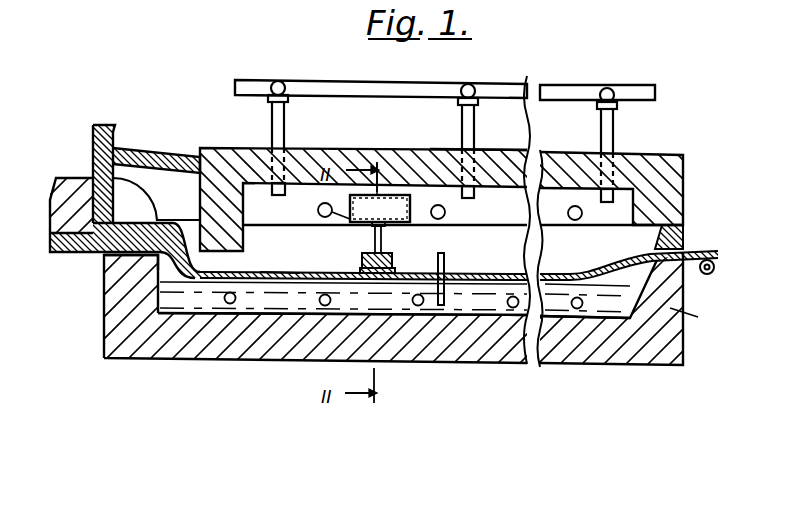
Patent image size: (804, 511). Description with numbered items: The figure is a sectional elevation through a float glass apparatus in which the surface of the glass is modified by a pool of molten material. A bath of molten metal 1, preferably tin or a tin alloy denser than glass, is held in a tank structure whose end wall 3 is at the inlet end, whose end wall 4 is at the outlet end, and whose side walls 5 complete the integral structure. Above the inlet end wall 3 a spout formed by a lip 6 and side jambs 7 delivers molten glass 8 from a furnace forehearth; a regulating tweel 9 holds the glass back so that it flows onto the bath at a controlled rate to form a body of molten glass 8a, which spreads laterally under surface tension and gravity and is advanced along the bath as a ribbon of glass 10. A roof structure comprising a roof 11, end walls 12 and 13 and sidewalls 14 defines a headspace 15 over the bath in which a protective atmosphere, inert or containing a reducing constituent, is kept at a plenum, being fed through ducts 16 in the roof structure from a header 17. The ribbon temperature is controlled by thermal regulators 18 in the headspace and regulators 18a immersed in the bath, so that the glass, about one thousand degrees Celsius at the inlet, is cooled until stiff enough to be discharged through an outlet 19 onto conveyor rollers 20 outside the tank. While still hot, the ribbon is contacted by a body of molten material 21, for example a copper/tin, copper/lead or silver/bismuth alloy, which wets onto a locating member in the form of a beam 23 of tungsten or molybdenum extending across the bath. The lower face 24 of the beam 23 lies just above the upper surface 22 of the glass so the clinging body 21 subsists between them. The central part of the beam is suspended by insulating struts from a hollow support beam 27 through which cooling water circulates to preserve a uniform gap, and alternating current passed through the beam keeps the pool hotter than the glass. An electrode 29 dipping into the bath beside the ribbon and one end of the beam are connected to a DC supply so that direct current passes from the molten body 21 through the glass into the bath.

The bath of molten metal 1 is at (497, 312).
The end wall 3 is at (115, 315).
The end wall 4 is at (690, 319).
The side walls 5 is at (402, 255).
The lip 6 is at (105, 265).
The side jambs 7 is at (138, 203).
The molten glass 8 is at (79, 184).
The body of molten glass 8a is at (210, 276).
The regulating tweel 9 is at (93, 146).
The ribbon of glass 10 is at (712, 276).
The roof 11 is at (512, 152).
The end wall 12 is at (206, 183).
The end wall 13 is at (678, 190).
The sidewalls 14 is at (254, 192).
The headspace 15 is at (463, 211).
The ducts 16 is at (275, 190).
The header 17 is at (297, 81).
The thermal regulators 18 is at (318, 210).
The regulators 18a is at (229, 305).
The outlet 19 is at (683, 245).
The conveyor rollers 20 is at (697, 306).
The body of molten material 21 is at (394, 268).
The upper surface 22 is at (278, 272).
The beam 23 is at (397, 258).
The lower face 24 is at (368, 257).
The support beam 27 is at (348, 222).
The electrode 29 is at (446, 263).